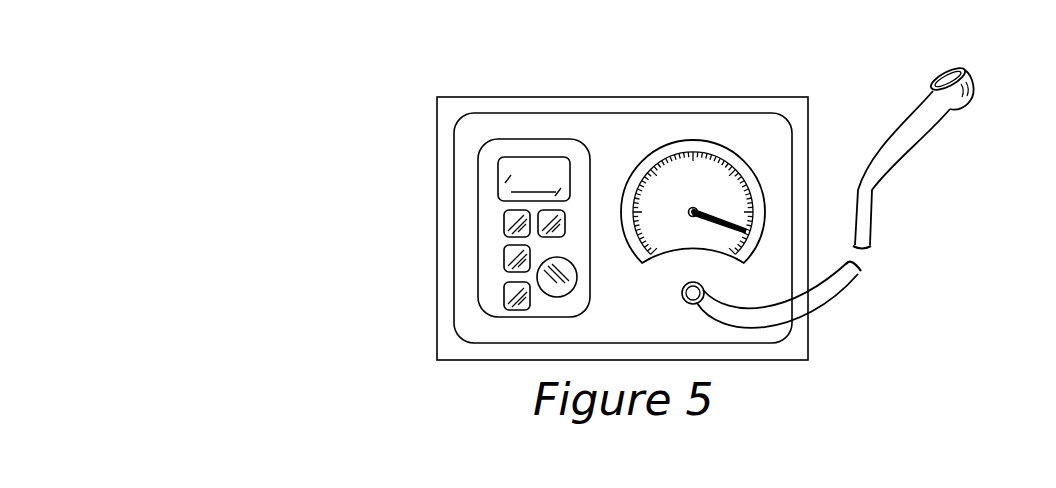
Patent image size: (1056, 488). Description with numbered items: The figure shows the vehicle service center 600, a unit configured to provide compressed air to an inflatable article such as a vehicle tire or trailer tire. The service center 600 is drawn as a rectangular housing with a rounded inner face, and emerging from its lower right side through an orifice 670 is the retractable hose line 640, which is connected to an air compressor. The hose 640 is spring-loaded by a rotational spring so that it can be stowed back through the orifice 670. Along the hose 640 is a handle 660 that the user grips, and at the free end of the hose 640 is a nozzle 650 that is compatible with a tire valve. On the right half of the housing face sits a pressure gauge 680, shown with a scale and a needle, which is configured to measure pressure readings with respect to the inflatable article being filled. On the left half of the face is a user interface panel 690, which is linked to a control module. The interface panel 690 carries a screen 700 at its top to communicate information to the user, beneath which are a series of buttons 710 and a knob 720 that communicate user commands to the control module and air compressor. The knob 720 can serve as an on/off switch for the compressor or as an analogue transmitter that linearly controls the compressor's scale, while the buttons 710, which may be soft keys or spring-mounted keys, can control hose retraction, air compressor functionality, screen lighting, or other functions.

The vehicle service center 600 is at (387, 99).
The retractable hose line 640 is at (826, 281).
The nozzle 650 is at (970, 76).
The handle 660 is at (937, 119).
The orifice 670 is at (679, 284).
The pressure gauge 680 is at (725, 157).
The user interface panel 690 is at (486, 147).
The screen 700 is at (534, 179).
The buttons 710 is at (504, 292).
The knob 720 is at (564, 293).